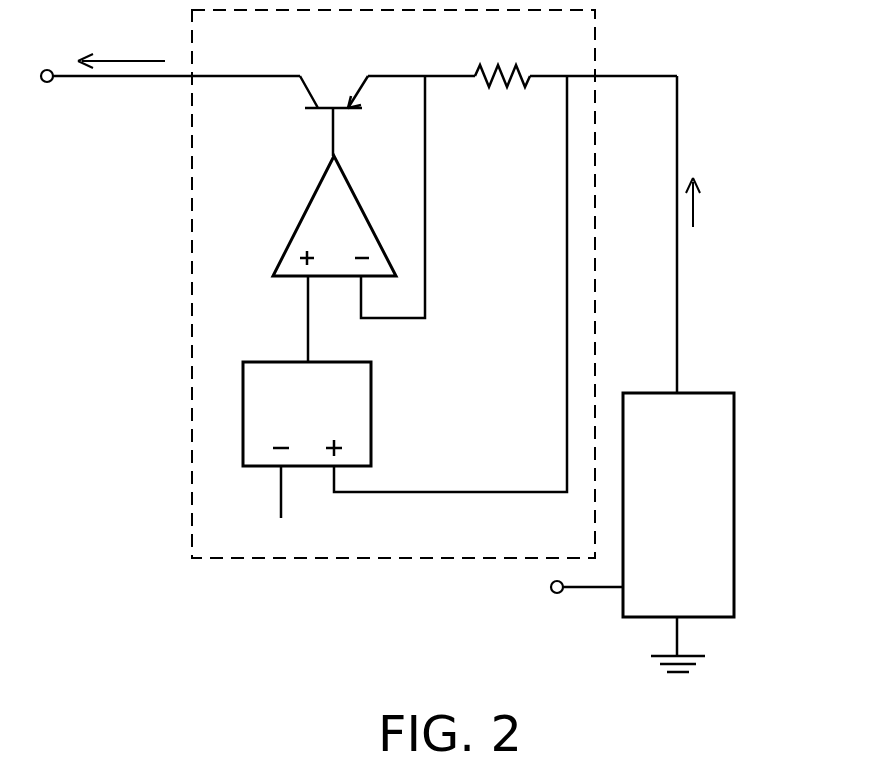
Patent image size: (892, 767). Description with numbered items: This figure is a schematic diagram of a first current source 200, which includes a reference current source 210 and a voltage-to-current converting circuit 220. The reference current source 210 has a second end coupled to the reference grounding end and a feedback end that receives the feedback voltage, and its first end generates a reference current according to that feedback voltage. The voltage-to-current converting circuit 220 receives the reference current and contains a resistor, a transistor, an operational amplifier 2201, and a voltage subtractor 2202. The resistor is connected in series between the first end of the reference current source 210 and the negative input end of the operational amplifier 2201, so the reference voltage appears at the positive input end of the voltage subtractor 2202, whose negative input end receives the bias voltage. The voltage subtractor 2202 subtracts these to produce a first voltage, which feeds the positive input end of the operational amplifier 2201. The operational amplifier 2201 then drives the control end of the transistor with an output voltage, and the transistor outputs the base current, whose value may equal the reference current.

The first current source 200 is at (835, 721).
The voltage-to-current converting circuit 220 is at (597, 40).
The operational amplifier 2201 is at (303, 216).
The voltage subtractor 2202 is at (373, 403).
The reference current source 210 is at (736, 505).